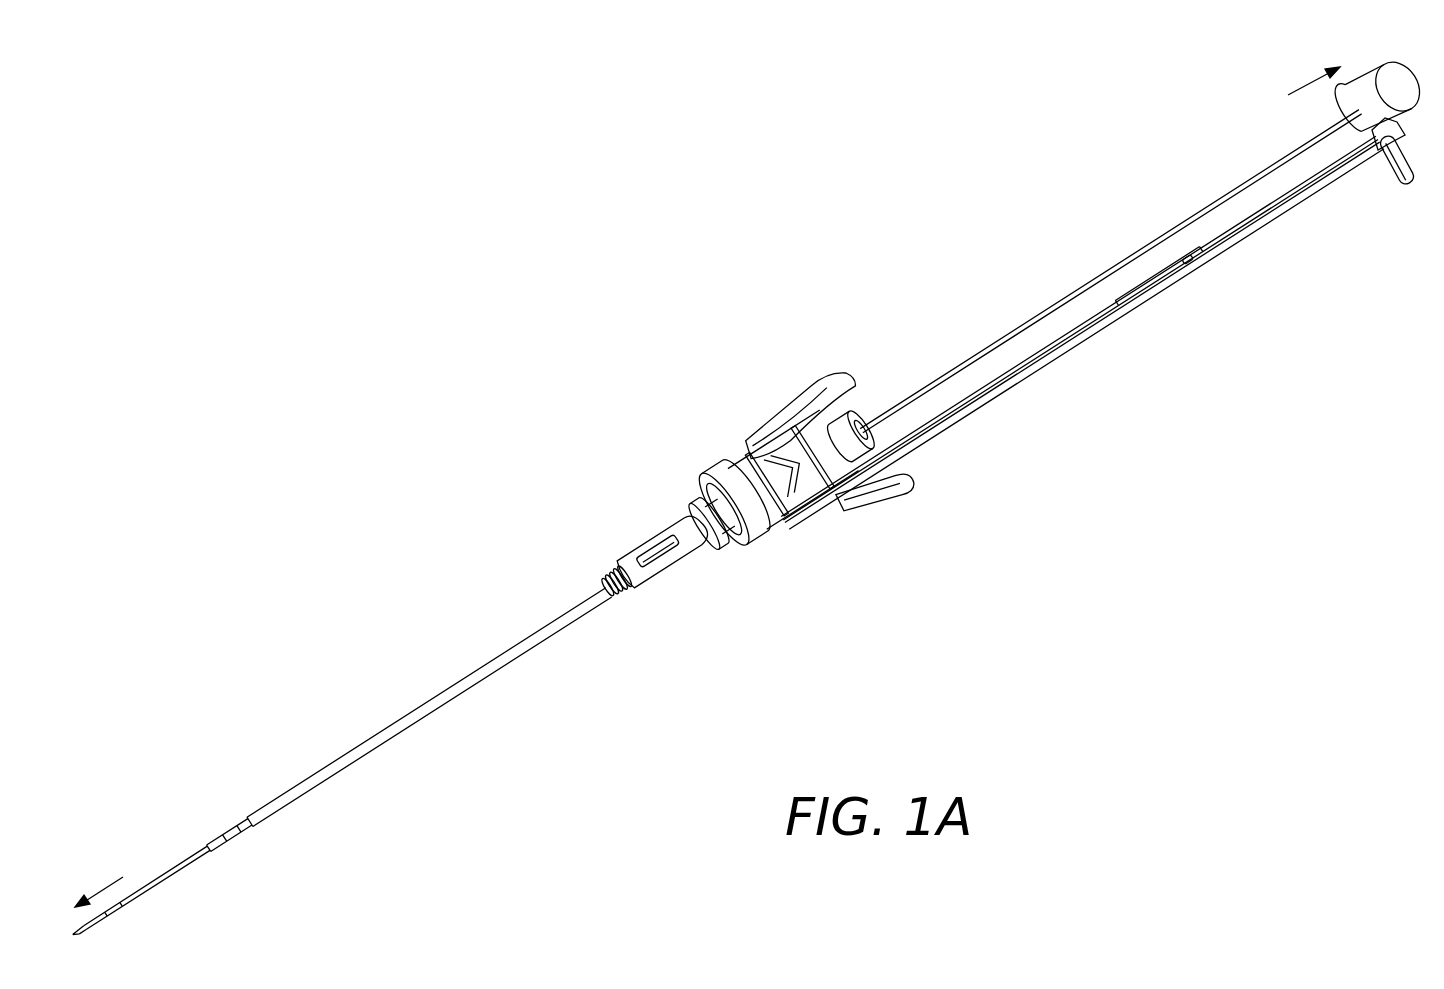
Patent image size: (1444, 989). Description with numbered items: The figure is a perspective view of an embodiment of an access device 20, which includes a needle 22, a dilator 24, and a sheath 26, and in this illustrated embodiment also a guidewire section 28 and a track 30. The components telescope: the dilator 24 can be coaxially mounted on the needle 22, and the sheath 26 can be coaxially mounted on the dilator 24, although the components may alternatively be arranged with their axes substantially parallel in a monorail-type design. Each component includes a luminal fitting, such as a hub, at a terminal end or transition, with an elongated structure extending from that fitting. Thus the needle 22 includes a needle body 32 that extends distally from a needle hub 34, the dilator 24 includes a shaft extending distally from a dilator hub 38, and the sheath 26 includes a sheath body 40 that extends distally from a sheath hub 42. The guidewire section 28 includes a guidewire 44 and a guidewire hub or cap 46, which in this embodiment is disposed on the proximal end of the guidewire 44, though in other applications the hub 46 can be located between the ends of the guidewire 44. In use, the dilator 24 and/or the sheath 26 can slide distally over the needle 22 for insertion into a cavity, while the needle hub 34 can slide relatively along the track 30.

The access device 20 is at (583, 168).
The needle 22 is at (147, 888).
The dilator 24 is at (229, 835).
The sheath 26 is at (429, 707).
The guidewire section 28 is at (1093, 288).
The track 30 is at (1082, 332).
The needle body 32 is at (79, 931).
The needle hub 34 is at (799, 414).
The dilator hub 38 is at (804, 484).
The sheath body 40 is at (429, 707).
The sheath hub 42 is at (663, 550).
The guidewire 44 is at (1110, 271).
The guidewire hub 46 is at (1407, 92).